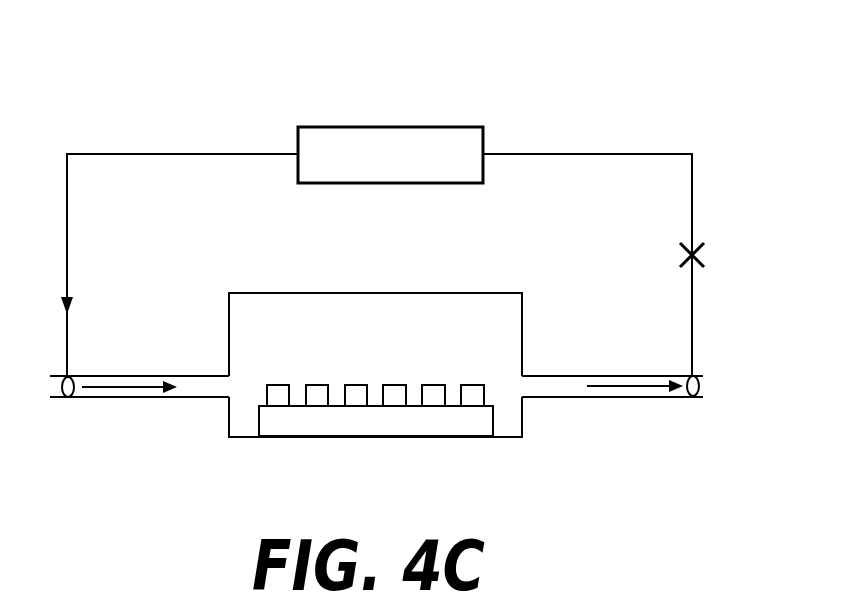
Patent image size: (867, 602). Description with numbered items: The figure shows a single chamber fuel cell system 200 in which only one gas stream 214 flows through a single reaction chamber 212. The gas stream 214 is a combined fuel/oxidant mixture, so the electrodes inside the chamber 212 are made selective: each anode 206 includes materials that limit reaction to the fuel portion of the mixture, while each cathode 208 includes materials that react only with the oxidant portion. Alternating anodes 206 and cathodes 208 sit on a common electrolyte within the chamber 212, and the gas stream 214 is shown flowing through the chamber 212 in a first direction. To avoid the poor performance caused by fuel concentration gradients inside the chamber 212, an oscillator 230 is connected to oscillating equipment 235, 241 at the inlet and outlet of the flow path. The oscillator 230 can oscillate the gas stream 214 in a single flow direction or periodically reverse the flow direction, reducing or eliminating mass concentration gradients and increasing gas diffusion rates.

The single chamber fuel cell system 200 is at (156, 117).
The oscillator 230 is at (388, 127).
The reaction chamber 212 is at (483, 293).
The gas stream 214 is at (180, 376).
The oscillating equipment 235 is at (69, 398).
The oscillating equipment 241 is at (693, 397).
The cathode 208 is at (275, 385).
The anode 206 is at (317, 385).